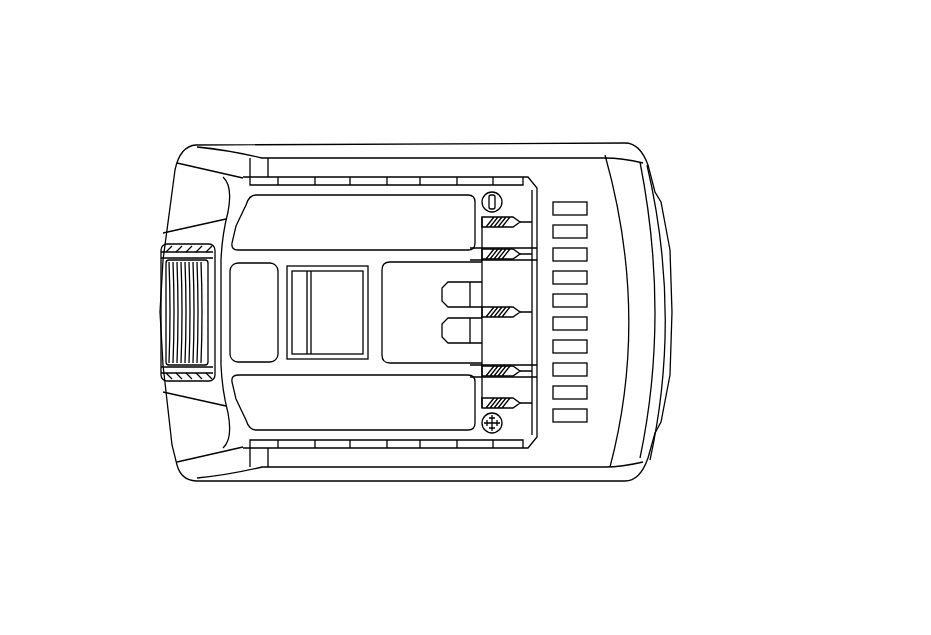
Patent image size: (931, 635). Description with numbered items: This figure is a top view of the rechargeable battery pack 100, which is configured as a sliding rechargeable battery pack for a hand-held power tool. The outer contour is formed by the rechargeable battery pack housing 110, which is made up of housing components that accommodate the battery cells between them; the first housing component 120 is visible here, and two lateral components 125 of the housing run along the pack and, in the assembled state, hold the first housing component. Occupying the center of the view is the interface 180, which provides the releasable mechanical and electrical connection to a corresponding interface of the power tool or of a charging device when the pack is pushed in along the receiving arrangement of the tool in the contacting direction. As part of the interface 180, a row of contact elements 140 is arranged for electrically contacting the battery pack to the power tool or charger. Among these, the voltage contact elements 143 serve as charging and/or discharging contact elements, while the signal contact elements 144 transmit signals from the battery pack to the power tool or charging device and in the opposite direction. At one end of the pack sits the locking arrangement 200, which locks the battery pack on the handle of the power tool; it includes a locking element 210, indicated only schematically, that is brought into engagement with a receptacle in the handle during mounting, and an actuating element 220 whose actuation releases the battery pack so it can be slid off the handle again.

The rechargeable battery pack 100 is at (163, 101).
The rechargeable battery pack housing 110 is at (156, 154).
The first housing component 120 is at (182, 427).
The lateral component 125 is at (413, 142).
The contact elements 140 is at (732, 100).
The voltage contact elements 143 is at (520, 222).
The signal contact elements 144 is at (520, 254).
The interface 180 is at (586, 109).
The locking arrangement 200 is at (76, 222).
The locking element 210 is at (335, 288).
The actuating element 220 is at (163, 312).